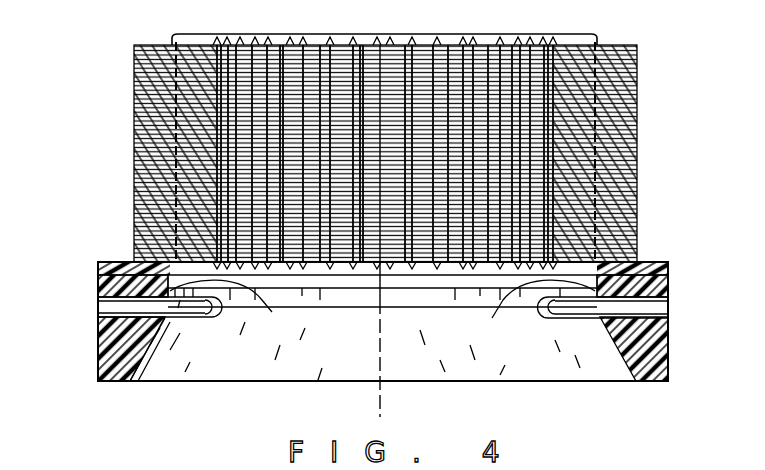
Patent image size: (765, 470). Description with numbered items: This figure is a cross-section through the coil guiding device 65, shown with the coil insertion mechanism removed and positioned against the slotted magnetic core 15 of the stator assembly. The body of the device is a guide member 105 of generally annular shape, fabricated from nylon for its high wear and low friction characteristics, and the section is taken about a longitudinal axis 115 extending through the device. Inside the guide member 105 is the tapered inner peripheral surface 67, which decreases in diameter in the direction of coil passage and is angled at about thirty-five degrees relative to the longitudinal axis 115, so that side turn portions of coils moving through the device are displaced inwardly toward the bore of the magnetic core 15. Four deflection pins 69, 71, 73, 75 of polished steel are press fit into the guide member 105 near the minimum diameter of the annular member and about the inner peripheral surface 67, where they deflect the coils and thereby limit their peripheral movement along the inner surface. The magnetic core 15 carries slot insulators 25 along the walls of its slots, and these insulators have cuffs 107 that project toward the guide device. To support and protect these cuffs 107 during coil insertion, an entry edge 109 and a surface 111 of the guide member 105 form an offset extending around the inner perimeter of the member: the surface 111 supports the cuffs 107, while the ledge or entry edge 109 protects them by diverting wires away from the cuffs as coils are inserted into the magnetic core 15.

The slotted magnetic core 15 is at (640, 147).
The slot liners or insulators 25 is at (666, 103).
The coil guiding device 65 is at (97, 385).
The tapered inner peripheral surface 67 is at (150, 362).
The deflection pin 69 is at (190, 316).
The deflection pin 71 is at (218, 312).
The deflection pin 73 is at (562, 312).
The deflection pin 75 is at (545, 312).
The guide member 105 is at (98, 338).
The cuffs 107 is at (595, 262).
The entry edge 109 is at (382, 308).
The surface 111 is at (688, 272).
The longitudinal axis 115 is at (380, 400).